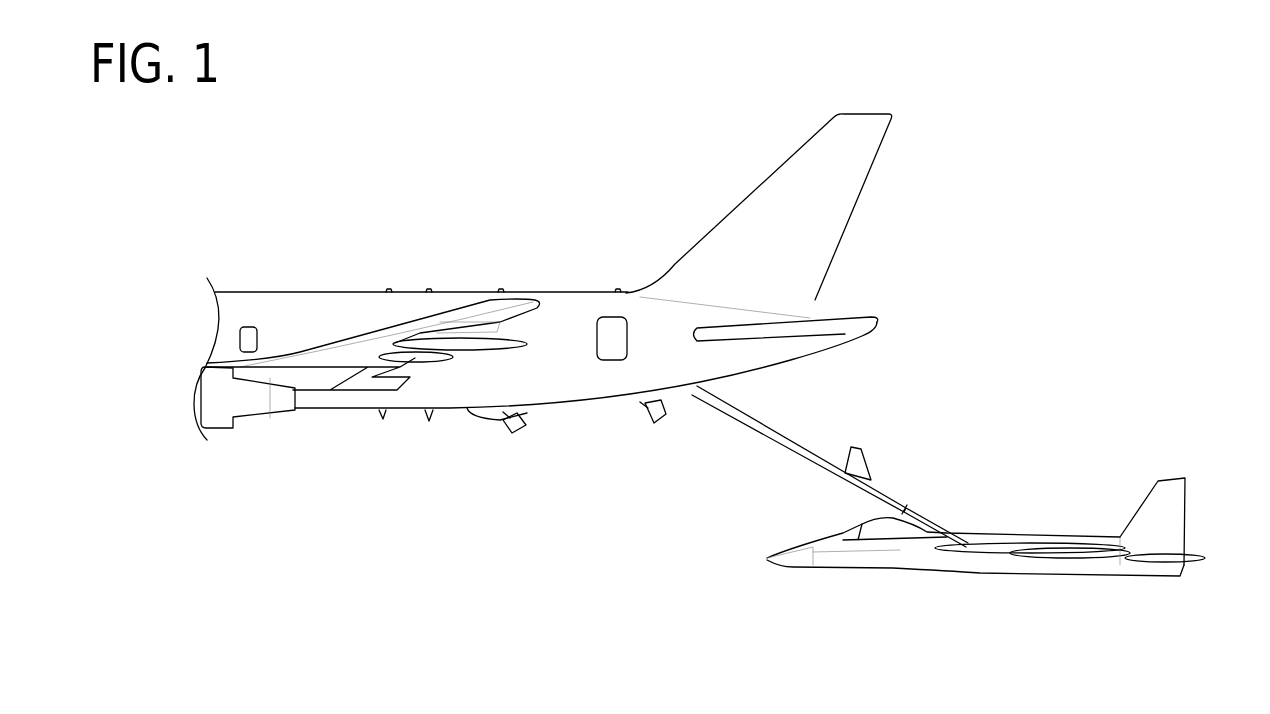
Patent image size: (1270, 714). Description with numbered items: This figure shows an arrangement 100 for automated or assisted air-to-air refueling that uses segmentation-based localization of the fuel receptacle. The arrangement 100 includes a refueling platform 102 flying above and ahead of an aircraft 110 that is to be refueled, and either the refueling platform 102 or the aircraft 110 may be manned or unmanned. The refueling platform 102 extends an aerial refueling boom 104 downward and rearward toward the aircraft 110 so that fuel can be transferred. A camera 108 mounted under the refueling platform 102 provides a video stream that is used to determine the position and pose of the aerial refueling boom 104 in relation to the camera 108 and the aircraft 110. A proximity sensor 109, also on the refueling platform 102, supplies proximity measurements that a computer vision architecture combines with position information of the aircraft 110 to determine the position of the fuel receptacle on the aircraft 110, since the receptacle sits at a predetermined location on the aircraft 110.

The arrangement 100 is at (1143, 35).
The refueling platform 102 is at (290, 470).
The aerial refueling boom 104 is at (822, 470).
The camera 108 is at (508, 418).
The proximity sensor 109 is at (648, 418).
The aircraft 110 is at (1080, 604).